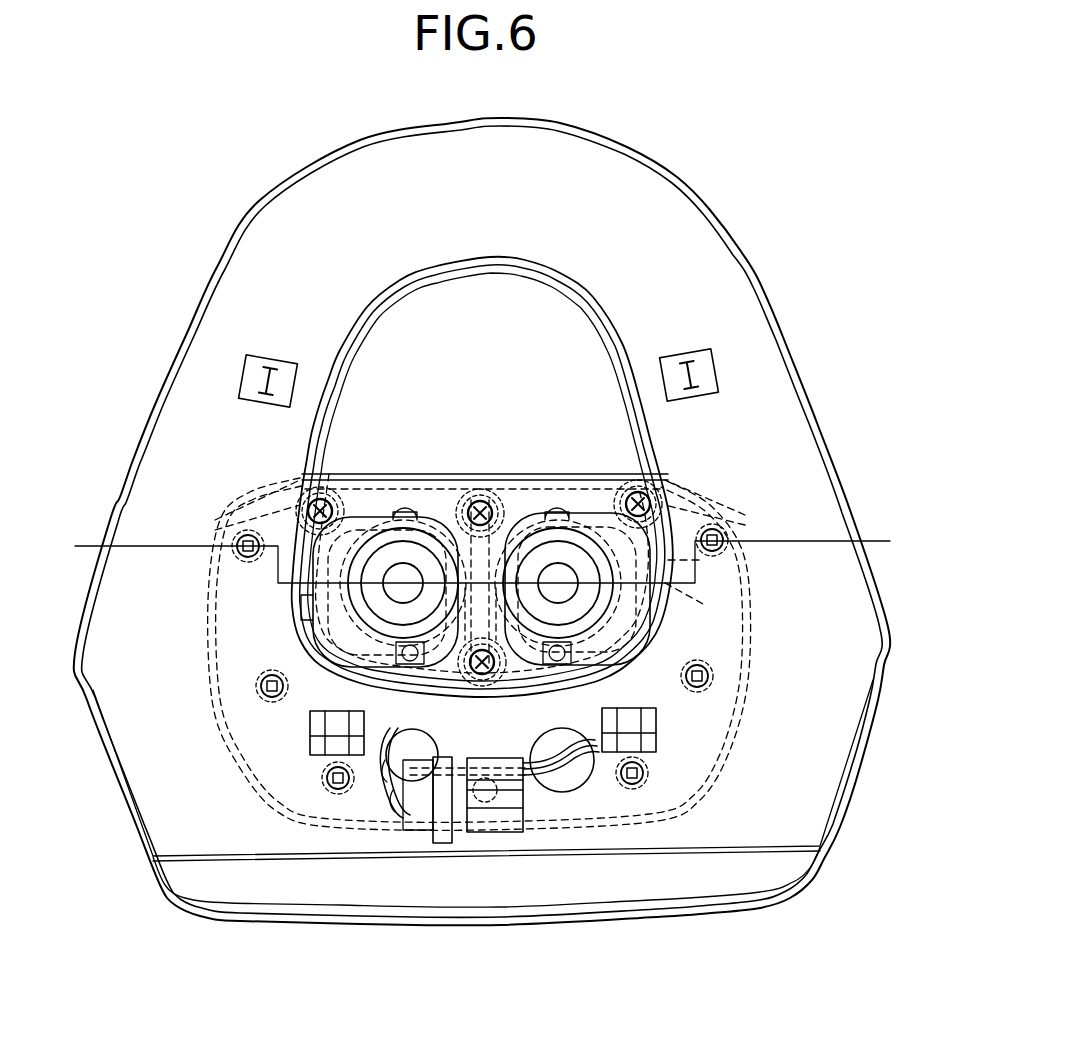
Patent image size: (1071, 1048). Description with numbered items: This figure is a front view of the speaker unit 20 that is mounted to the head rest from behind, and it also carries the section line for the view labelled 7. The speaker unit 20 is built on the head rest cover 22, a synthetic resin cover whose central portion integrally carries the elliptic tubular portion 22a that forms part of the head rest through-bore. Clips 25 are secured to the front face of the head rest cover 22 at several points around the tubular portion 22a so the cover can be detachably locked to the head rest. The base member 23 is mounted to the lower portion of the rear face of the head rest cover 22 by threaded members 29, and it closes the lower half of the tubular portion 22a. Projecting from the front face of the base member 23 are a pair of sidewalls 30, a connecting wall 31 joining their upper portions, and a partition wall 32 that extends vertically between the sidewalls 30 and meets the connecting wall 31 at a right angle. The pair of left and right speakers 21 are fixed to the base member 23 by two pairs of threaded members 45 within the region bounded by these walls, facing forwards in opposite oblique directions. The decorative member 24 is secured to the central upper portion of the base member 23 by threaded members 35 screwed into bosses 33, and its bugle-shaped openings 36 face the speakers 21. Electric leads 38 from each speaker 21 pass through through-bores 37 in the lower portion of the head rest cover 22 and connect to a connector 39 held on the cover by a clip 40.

The speaker unit 20 is at (684, 162).
The head rest cover 22 is at (710, 310).
The tubular portion 22a is at (568, 296).
The speaker 21 is at (327, 673).
The base member 23 is at (348, 474).
The decorative member 24 is at (383, 500).
The clip 25 is at (266, 380).
The threaded member 29 is at (262, 673).
The sidewall 30 is at (293, 510).
The connecting wall 31 is at (694, 595).
The partition wall 32 is at (500, 478).
The boss 33 is at (318, 498).
The threaded member 35 is at (312, 505).
The opening 36 is at (582, 515).
The through-bore 37 is at (588, 777).
The electric lead 38 is at (400, 737).
The connector 39 is at (485, 823).
The clip 40 is at (447, 837).
The threaded member 45 is at (407, 505).
The section line 7- 7 is at (90, 535).